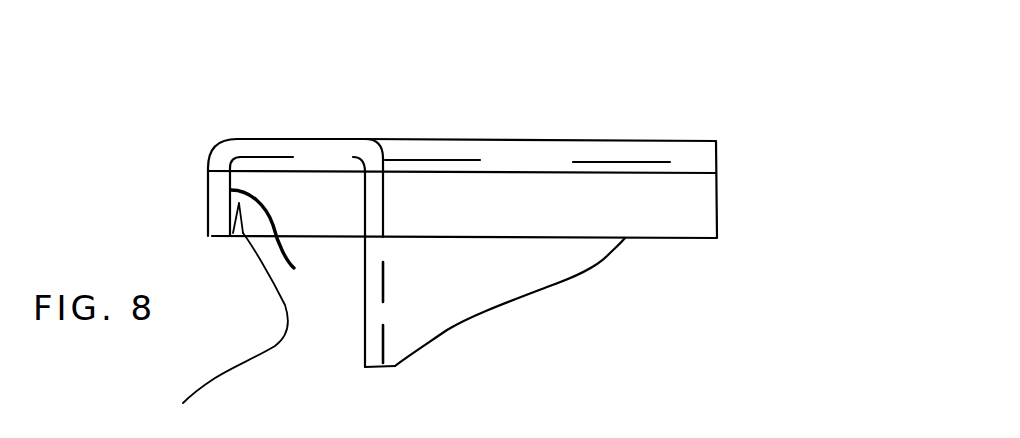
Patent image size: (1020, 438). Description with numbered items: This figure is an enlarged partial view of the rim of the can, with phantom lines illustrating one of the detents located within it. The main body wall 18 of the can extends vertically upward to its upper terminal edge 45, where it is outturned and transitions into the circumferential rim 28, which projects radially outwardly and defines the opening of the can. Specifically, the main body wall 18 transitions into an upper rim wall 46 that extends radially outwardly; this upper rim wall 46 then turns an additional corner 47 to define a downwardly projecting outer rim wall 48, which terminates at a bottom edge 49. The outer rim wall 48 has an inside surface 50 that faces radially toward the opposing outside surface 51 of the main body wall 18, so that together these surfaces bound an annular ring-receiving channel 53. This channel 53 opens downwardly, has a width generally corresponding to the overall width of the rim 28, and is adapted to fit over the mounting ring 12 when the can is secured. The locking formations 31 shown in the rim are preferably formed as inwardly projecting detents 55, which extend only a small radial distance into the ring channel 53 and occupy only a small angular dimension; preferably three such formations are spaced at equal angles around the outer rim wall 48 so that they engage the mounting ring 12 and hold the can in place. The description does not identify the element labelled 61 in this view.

The mounting ring 12 is at (572, 437).
The main body wall 18 is at (378, 346).
The circumferential rim 28 is at (584, 141).
The locking formations 31 is at (208, 202).
The upper terminal edge 45 is at (368, 139).
The upper rim wall 46 is at (267, 147).
The additional corner 47 is at (220, 150).
The outer rim wall 48 is at (207, 180).
The bottom edge 49 is at (230, 236).
The inside surface 50 is at (282, 249).
The outside surface 51 is at (365, 317).
The annular ring-receiving channel 53 is at (317, 200).
The detents 55 is at (221, 320).
The edge 61 is at (428, 422).